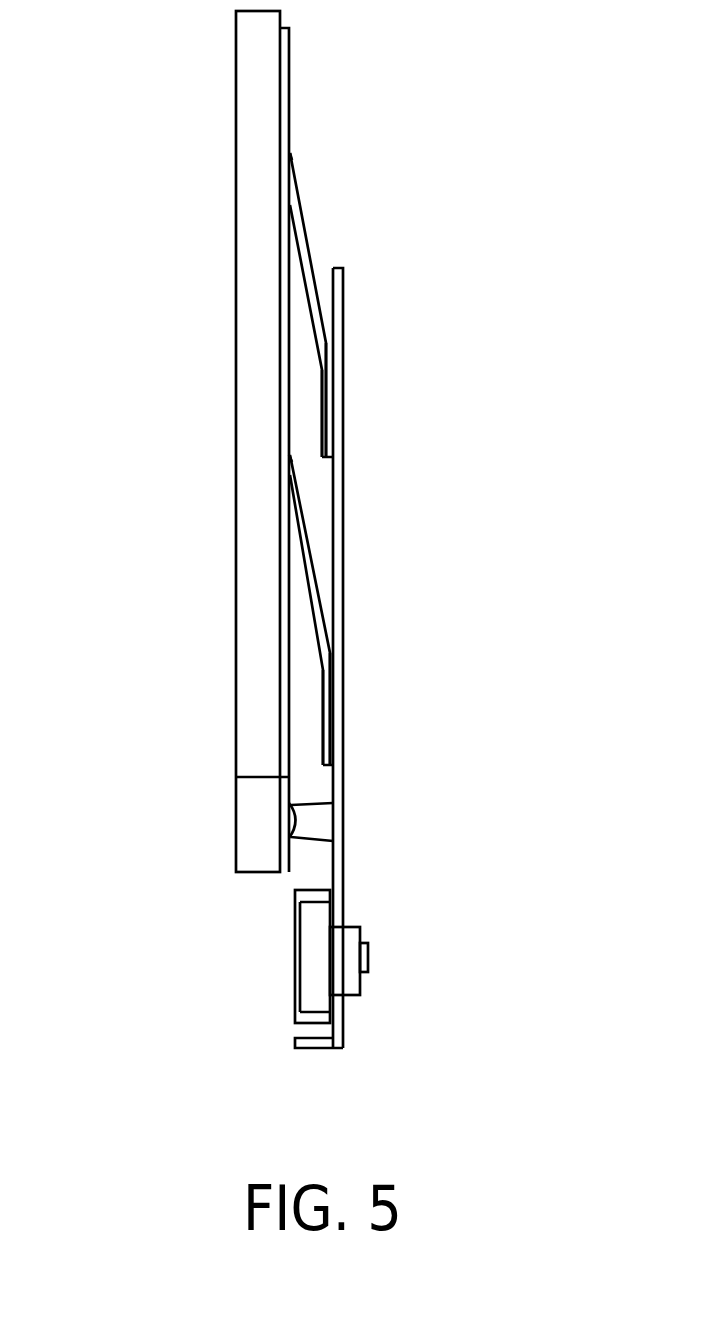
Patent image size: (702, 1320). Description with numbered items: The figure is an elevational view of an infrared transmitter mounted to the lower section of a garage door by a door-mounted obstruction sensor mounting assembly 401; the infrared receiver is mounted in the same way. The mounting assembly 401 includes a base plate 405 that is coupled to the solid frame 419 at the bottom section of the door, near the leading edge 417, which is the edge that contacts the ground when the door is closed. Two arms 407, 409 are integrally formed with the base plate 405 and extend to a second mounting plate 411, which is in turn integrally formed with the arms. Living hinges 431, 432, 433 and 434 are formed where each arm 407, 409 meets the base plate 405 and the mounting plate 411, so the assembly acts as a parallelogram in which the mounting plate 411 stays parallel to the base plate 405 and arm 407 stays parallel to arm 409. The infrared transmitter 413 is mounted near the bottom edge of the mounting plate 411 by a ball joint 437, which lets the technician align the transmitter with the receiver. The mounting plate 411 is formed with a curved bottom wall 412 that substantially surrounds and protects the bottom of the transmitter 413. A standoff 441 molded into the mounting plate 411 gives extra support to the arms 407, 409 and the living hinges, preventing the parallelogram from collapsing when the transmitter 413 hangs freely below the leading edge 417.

The mounting assembly 401 is at (423, 452).
The base plate 405 is at (285, 50).
The arm 407 is at (310, 260).
The arm 409 is at (312, 602).
The second mounting plate 411 is at (343, 912).
The curved bottom wall 412 is at (316, 1050).
The infrared transmitter 413 is at (317, 890).
The leading edge 417 is at (262, 872).
The frame 419 is at (255, 852).
The living hinge 431 is at (280, 161).
The living hinge 432 is at (283, 455).
The living hinge 433 is at (327, 360).
The living hinge 434 is at (328, 672).
The ball joint 437 is at (364, 977).
The standoff 441 is at (317, 820).